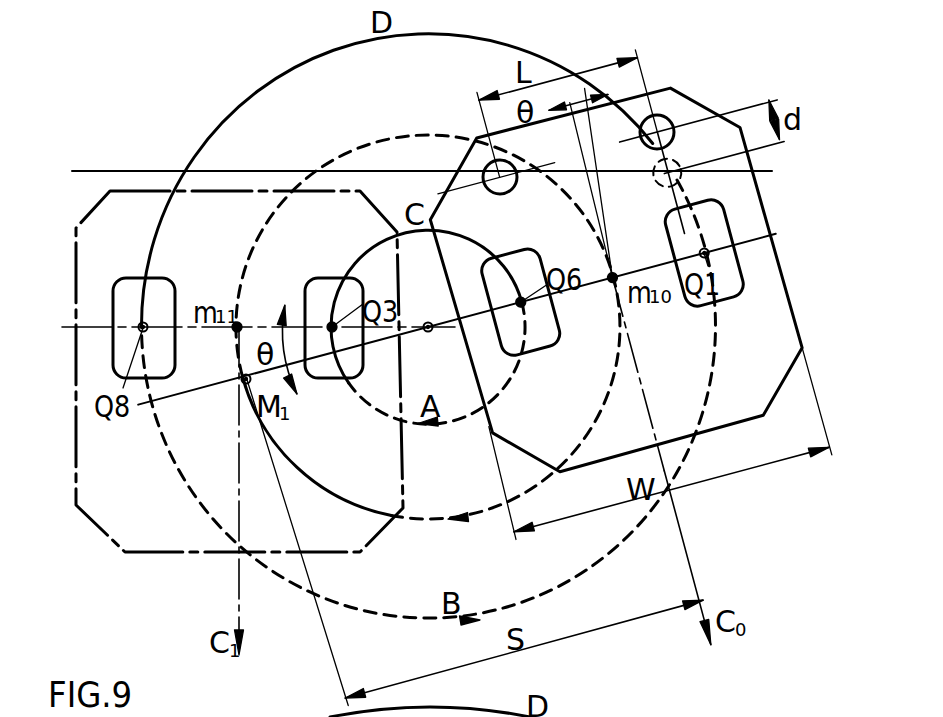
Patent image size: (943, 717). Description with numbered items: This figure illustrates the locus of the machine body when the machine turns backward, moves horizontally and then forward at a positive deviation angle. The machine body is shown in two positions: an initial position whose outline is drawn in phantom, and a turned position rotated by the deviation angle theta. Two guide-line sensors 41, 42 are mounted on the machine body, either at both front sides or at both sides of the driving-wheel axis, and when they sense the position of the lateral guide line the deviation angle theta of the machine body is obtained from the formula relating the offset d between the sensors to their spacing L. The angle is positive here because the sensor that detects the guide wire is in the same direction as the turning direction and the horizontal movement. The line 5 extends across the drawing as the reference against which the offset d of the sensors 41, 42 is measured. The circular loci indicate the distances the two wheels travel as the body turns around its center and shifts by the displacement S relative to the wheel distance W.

The reference line 5 is at (113, 170).
The guide-line sensor 41 is at (500, 177).
The guide-line sensor 42 is at (660, 114).